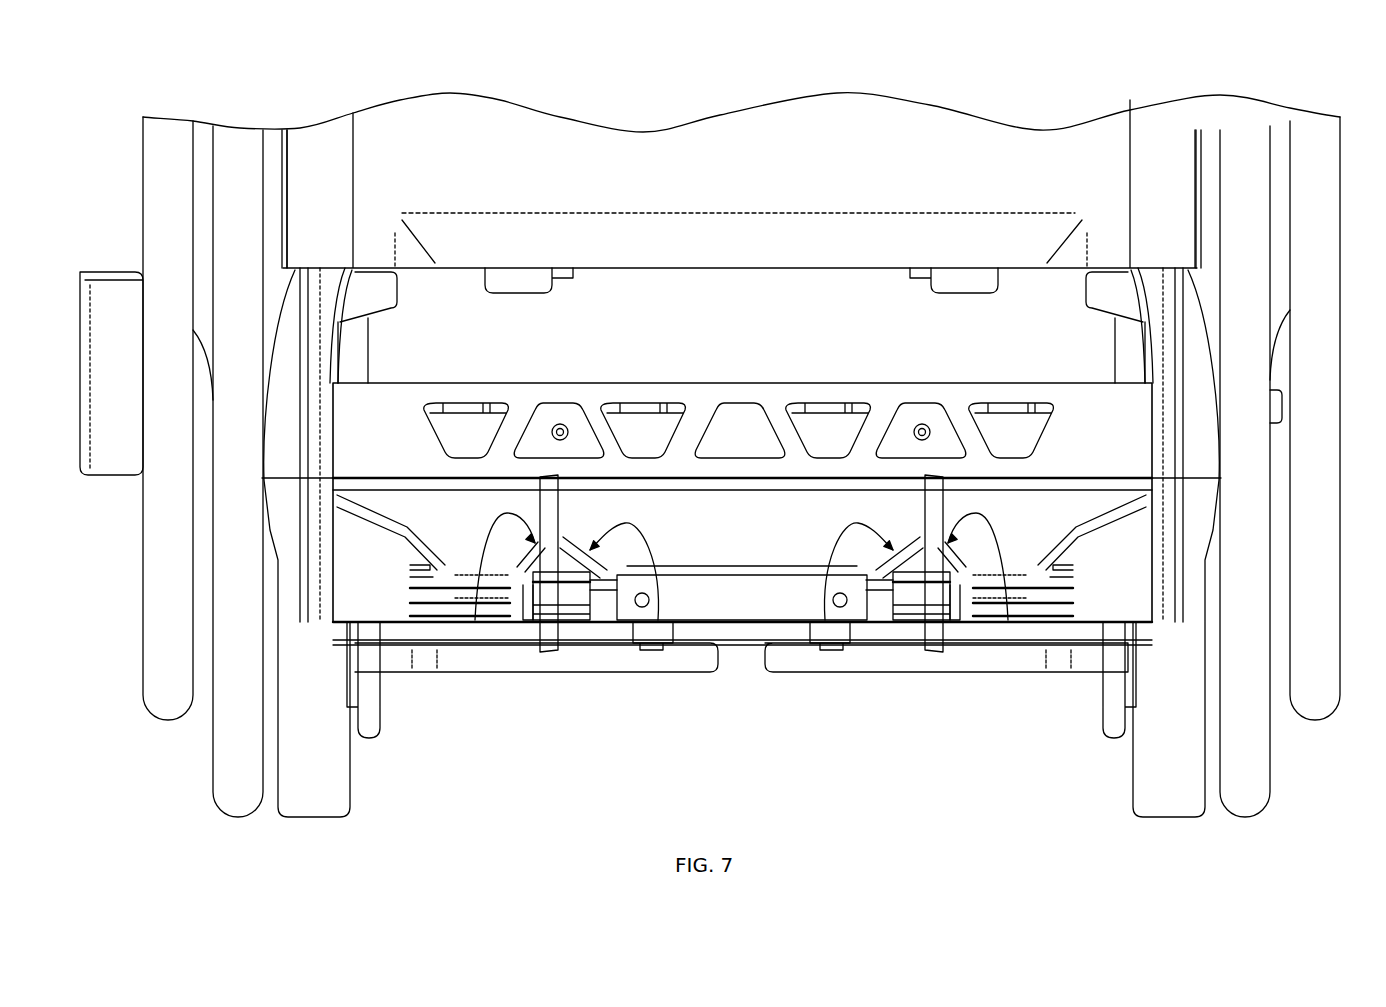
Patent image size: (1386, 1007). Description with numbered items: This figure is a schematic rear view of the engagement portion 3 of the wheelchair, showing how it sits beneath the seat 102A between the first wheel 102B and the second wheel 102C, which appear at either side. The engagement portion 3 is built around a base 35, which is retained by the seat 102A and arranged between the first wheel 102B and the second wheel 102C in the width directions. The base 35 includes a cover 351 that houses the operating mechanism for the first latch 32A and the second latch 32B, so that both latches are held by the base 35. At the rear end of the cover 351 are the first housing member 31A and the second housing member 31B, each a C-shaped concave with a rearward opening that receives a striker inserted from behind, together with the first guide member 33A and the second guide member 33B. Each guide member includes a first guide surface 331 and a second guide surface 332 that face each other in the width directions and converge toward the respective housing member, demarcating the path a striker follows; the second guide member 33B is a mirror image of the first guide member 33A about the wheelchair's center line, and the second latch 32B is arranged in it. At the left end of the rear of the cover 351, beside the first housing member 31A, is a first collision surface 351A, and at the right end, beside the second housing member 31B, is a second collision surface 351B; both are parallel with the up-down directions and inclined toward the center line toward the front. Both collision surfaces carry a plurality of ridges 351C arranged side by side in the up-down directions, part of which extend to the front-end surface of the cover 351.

The seat 102A is at (968, 147).
The first wheel 102B is at (230, 797).
The second wheel 102C is at (1253, 795).
The engagement portion 3 is at (745, 637).
The base 35 is at (728, 630).
The first housing member 31A is at (472, 563).
The second housing member 31B is at (1011, 563).
The first latch 32A is at (567, 585).
The second latch 32B is at (916, 585).
The first guide member 33A is at (647, 637).
The second guide member 33B is at (836, 637).
The first guide surface 331 is at (523, 597).
The second guide surface 332 is at (600, 600).
The cover 351 is at (1115, 588).
The first collision surface 351A is at (423, 585).
The second collision surface 351B is at (1060, 585).
The ridges 351C is at (450, 593).